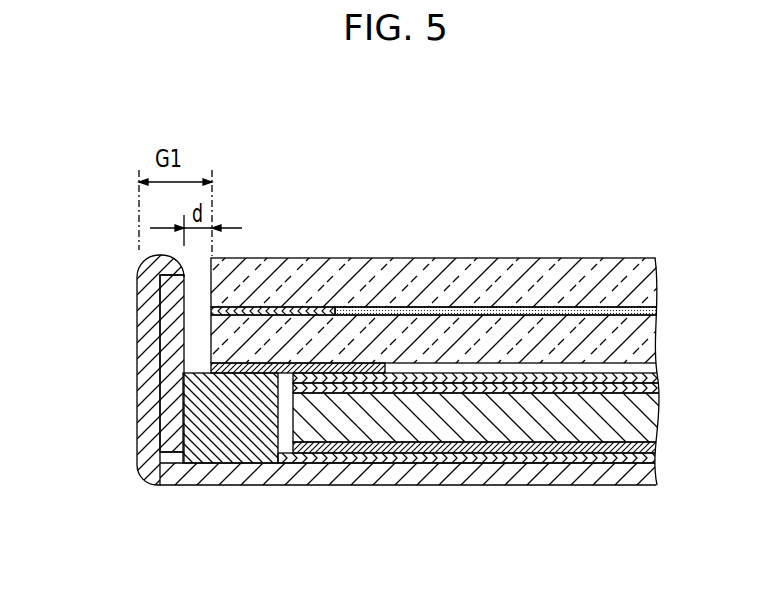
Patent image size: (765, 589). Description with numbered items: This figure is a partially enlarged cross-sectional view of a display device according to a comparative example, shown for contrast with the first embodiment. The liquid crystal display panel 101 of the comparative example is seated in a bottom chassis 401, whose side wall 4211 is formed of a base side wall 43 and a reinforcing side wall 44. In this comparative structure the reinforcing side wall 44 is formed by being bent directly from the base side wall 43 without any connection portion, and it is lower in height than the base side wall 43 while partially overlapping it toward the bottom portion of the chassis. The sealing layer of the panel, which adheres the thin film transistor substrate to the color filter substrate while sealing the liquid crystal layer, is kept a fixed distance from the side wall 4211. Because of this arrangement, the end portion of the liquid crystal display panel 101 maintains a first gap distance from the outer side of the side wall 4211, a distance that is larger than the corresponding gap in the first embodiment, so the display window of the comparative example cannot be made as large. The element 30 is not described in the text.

The liquid crystal display panel 101 is at (583, 249).
The support member 30 is at (222, 457).
The base side wall 43 is at (148, 331).
The reinforcing side wall 44 is at (168, 378).
The bottom chassis 401 is at (104, 399).
The side wall 4211 is at (104, 370).